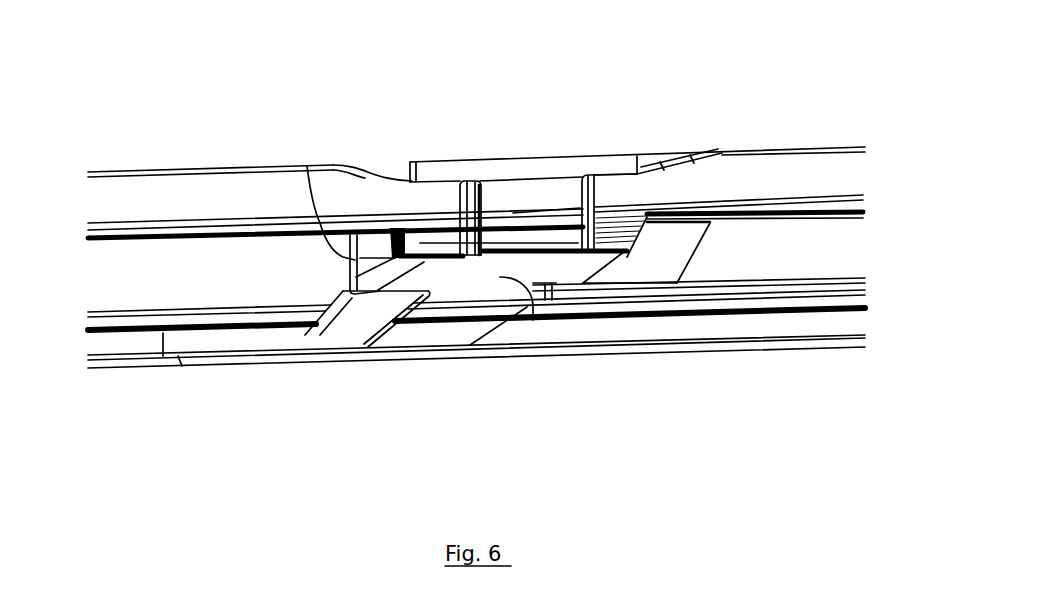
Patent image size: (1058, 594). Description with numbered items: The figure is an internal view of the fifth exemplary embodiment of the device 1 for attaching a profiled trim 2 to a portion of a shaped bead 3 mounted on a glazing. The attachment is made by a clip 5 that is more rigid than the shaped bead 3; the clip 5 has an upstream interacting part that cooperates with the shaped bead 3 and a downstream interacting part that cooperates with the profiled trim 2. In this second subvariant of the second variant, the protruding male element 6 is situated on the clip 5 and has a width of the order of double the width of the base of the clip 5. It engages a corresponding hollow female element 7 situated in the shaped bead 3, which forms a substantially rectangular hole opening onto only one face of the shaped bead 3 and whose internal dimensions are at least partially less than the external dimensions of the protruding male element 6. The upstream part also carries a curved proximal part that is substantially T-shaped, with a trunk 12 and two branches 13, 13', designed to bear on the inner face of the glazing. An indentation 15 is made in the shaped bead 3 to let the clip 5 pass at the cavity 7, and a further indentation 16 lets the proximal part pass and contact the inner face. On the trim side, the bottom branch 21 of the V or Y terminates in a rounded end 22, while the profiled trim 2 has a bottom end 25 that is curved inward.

The device 1 is at (305, 115).
The profiled trim 2 is at (750, 322).
The shaped bead 3 is at (820, 170).
The clip 5 is at (533, 318).
The protruding male element 6 is at (332, 167).
The hollow female element 7 is at (343, 250).
The trunk 12 is at (477, 180).
The branch 13 is at (418, 112).
The branch 13' is at (637, 109).
The indentation 15 is at (497, 203).
The indentation 16 is at (658, 163).
The bottom branch 21 is at (470, 345).
The rounded end 22 is at (320, 327).
The bottom end 25 is at (706, 313).